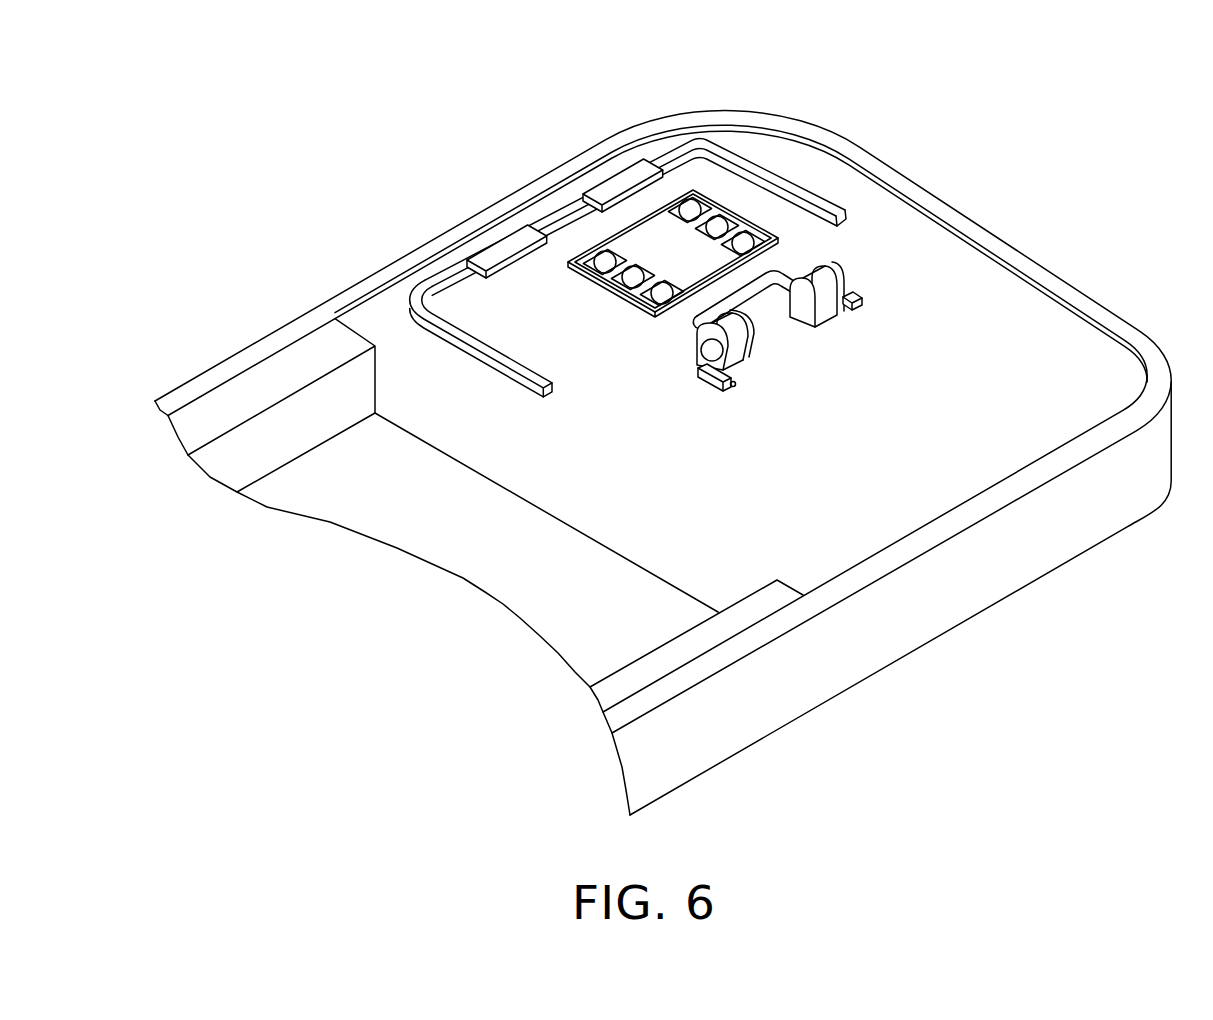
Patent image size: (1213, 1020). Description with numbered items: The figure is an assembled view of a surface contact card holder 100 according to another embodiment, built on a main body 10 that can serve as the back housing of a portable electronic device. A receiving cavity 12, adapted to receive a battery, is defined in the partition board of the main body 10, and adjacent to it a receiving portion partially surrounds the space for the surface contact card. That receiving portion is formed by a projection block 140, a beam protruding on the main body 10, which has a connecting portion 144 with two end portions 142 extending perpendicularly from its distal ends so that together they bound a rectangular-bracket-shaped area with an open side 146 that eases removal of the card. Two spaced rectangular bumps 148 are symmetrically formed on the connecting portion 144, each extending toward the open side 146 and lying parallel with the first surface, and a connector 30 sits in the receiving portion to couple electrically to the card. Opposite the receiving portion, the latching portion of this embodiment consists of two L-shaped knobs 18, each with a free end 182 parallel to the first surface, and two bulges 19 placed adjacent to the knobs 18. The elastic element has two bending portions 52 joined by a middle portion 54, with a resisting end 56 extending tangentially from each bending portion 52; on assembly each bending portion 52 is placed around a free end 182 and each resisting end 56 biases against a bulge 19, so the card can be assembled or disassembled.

The surface contact card holder 100 is at (834, 84).
The main body 10 is at (663, 488).
The receiving cavity 12 is at (620, 630).
The knob 18 is at (818, 312).
The bulge 19 is at (857, 300).
The connector 30 is at (710, 250).
The bending portion 52 is at (735, 355).
The middle portion 54 is at (750, 290).
The resisting end 56 is at (733, 385).
The projection block 140 is at (629, 317).
The end portion 142 is at (737, 153).
The connecting portion 144 is at (560, 217).
The open side 146 is at (813, 238).
The rectangular bump 148 is at (523, 240).
The free end 182 is at (700, 372).